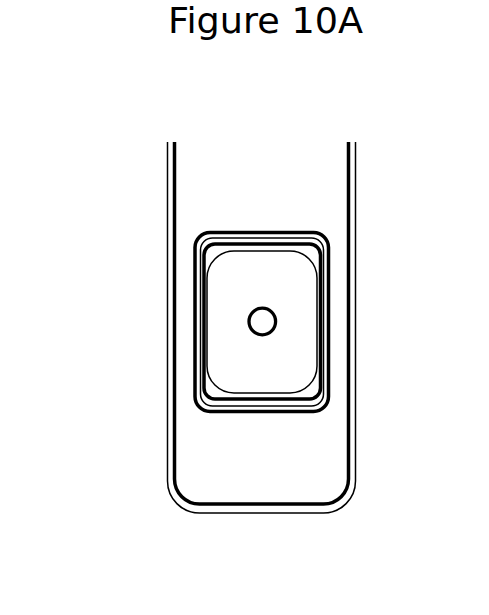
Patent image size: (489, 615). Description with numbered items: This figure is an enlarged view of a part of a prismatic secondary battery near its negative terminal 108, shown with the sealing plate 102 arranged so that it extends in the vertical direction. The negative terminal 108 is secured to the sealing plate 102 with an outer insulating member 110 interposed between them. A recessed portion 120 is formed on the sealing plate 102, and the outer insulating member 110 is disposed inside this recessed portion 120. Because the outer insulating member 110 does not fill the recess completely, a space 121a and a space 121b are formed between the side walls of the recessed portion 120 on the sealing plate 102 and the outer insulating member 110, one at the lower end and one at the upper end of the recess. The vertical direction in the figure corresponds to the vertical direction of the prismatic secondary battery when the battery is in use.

The sealing plate 102 is at (312, 453).
The negative terminal 108 is at (293, 295).
The outer insulating member 110 is at (285, 249).
The recessed portion 120 is at (262, 234).
The space 121a is at (257, 407).
The space 121b is at (216, 236).